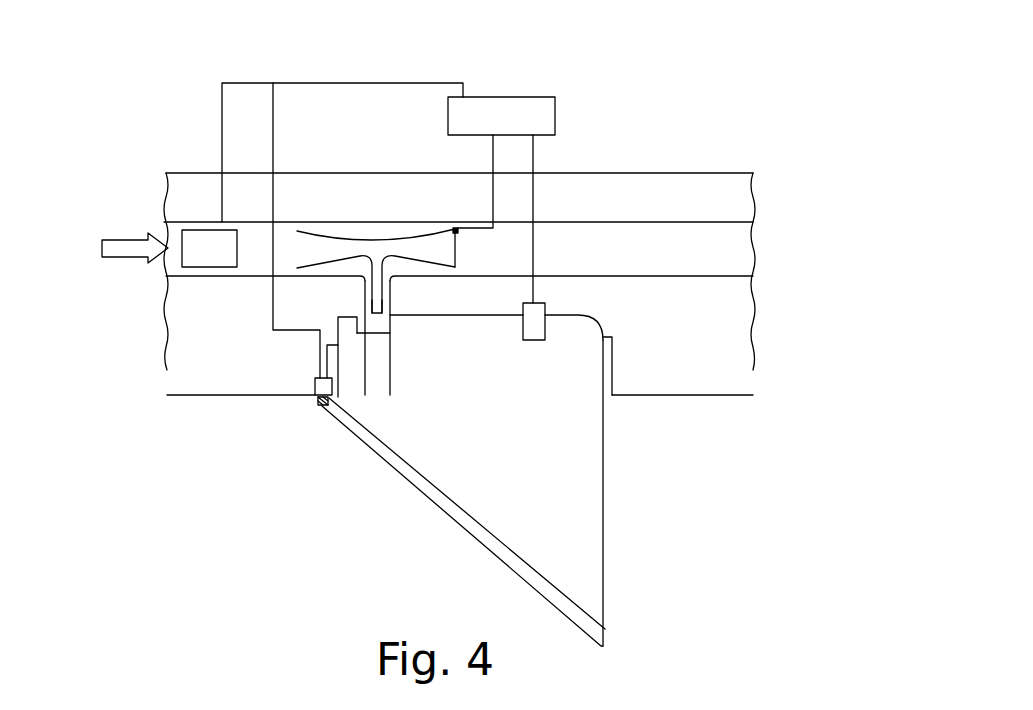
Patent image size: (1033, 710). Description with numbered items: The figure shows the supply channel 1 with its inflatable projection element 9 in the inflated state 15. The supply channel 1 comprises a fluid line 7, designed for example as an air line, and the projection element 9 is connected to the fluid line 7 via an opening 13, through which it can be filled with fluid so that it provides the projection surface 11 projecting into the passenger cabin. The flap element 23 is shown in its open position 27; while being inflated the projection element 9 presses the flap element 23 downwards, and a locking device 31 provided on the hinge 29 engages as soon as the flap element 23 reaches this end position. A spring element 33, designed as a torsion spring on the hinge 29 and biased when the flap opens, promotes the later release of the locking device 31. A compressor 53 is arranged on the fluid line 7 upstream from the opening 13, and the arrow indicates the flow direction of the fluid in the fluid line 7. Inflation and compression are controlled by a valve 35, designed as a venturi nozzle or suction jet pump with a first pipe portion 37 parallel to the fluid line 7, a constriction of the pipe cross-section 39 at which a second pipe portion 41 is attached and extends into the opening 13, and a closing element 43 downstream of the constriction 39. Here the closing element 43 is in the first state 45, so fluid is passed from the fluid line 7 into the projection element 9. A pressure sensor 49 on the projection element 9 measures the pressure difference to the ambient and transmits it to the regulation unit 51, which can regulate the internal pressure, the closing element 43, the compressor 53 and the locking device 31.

The supply channel 1 is at (742, 196).
The fluid line 7 is at (582, 220).
The inflatable projection element 9 is at (560, 417).
The projection surface 11 is at (606, 537).
The opening 13 is at (378, 328).
The inflated state 15 is at (347, 490).
The flap element 23 is at (450, 515).
The open position 27 is at (390, 490).
The hinge 29 is at (321, 404).
The locking device 31 is at (314, 385).
The spring element 33 is at (321, 406).
The valve 35 is at (322, 234).
The first pipe portion 37 is at (330, 248).
The constriction of the pipe cross-section 39 is at (377, 252).
The second pipe portion 41 is at (364, 278).
The closing element 43 is at (460, 248).
The first state 45 is at (466, 235).
The pressure sensor 49 is at (545, 307).
The regulation unit 51 is at (522, 108).
The compressor 53 is at (207, 237).